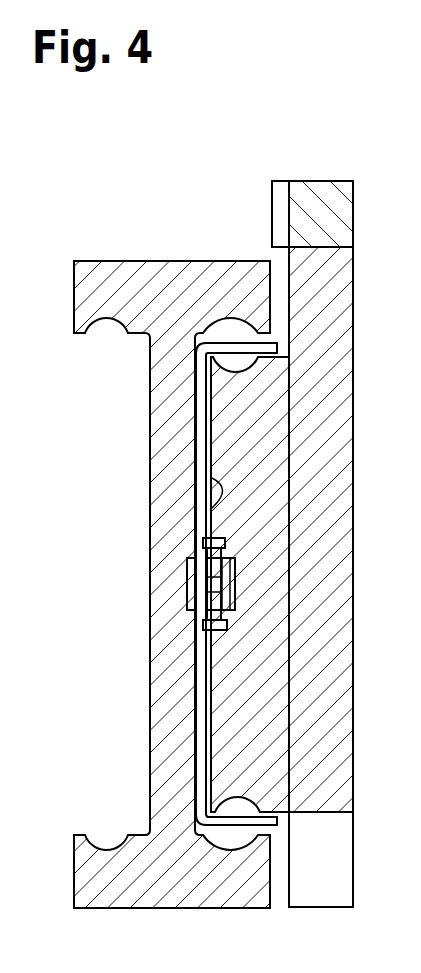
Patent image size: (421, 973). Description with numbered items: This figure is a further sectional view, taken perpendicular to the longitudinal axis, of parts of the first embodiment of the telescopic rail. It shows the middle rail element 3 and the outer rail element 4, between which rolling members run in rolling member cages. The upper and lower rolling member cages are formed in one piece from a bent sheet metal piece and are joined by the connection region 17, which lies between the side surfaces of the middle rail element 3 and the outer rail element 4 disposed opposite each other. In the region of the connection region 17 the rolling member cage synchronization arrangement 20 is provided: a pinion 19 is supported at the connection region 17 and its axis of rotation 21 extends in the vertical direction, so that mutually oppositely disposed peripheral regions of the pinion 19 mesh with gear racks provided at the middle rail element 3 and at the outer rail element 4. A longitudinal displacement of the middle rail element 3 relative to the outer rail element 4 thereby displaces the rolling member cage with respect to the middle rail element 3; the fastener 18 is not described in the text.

The middle rail element 3 is at (164, 281).
The outer rail element 4 is at (270, 438).
The connection region 17 is at (192, 460).
The nut 18 is at (230, 622).
The pinion 19 is at (190, 592).
The rolling member cage synchronization arrangement 20 is at (120, 575).
The axis of rotation 21 is at (226, 516).